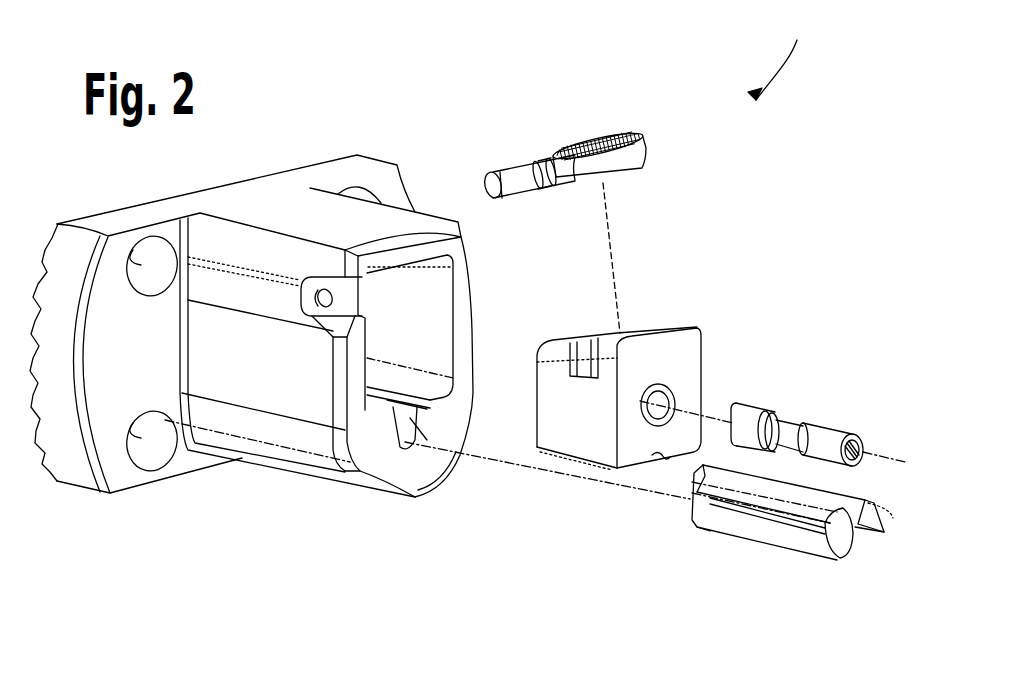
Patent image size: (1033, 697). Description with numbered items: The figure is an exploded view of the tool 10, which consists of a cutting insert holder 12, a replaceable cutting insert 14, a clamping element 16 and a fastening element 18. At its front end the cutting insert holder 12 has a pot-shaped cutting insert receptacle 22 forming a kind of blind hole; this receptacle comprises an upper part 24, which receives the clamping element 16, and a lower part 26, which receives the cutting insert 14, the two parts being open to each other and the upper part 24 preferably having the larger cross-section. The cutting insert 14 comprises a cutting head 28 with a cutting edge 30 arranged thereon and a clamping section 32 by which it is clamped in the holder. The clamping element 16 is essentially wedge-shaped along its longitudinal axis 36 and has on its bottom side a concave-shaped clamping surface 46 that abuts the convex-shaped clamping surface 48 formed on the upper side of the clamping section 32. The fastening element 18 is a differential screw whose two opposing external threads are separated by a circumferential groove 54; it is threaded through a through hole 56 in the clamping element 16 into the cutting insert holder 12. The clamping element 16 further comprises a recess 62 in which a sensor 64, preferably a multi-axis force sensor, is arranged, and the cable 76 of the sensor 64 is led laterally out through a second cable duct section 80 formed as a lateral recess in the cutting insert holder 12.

The tool 10 is at (780, 55).
The cutting insert holder 12 is at (257, 437).
The cutting insert 14 is at (805, 532).
The clamping element 16 is at (688, 352).
The fastening element 18 is at (790, 422).
The cutting insert receptacle 22 is at (423, 306).
The upper part 24 is at (393, 337).
The lower part 26 is at (413, 418).
The cutting head 28 is at (880, 514).
The cutting edge 30 is at (876, 537).
The clamping section 32 is at (760, 522).
The longitudinal axis of the clamping element 36 is at (712, 414).
The concave-shaped clamping surface 46 is at (660, 458).
The convex-shaped clamping surface 48 is at (713, 478).
The circumferential groove 54 is at (805, 425).
The through hole 56 is at (645, 418).
The recess 62 is at (641, 328).
The sensor 64 is at (646, 157).
The cable 76 is at (523, 173).
The second cable duct section 80 is at (318, 316).